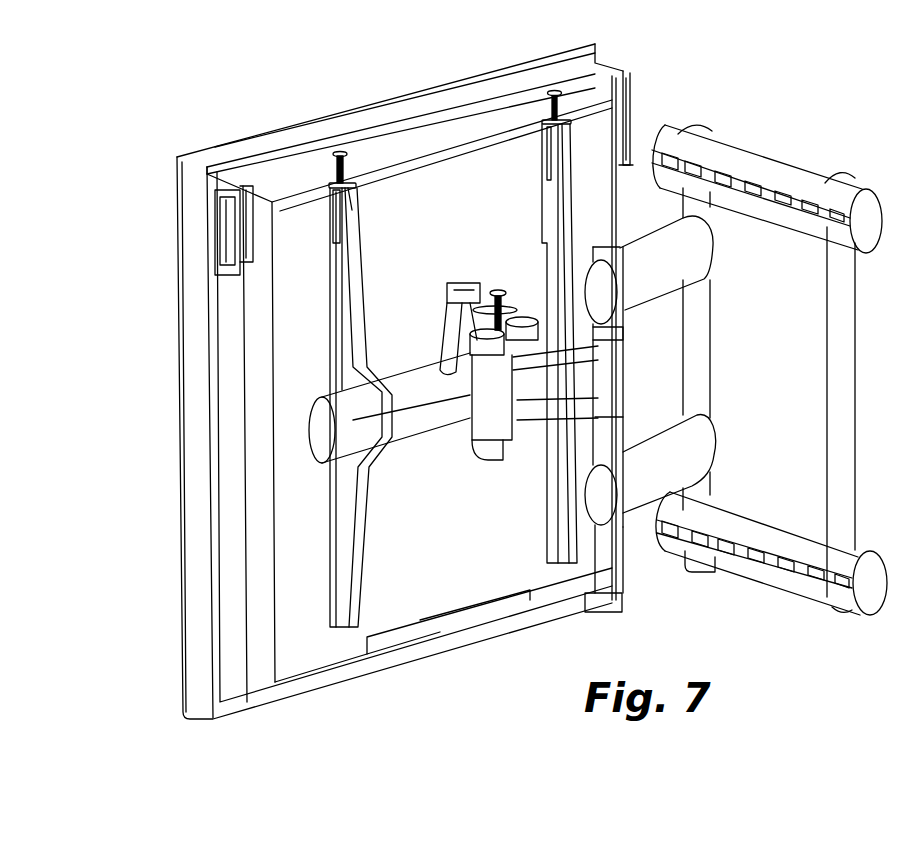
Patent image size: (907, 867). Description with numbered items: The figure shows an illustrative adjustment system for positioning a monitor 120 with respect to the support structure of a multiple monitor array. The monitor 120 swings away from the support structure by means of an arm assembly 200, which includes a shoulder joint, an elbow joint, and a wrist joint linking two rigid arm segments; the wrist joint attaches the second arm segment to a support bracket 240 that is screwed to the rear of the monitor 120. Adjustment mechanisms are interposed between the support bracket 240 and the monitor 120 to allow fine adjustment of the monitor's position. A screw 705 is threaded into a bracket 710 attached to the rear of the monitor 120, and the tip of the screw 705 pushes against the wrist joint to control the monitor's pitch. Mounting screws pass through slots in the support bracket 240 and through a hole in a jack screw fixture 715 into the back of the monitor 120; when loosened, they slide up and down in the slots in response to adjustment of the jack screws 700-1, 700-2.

The monitor 120 is at (158, 158).
The arm assembly 200 is at (680, 92).
The support bracket 240 is at (333, 357).
The jack screw 700-1 is at (338, 165).
The jack screw 700-2 is at (547, 98).
The screw 705 is at (495, 290).
The bracket 710 is at (460, 290).
The jack screw fixture 715 is at (335, 290).